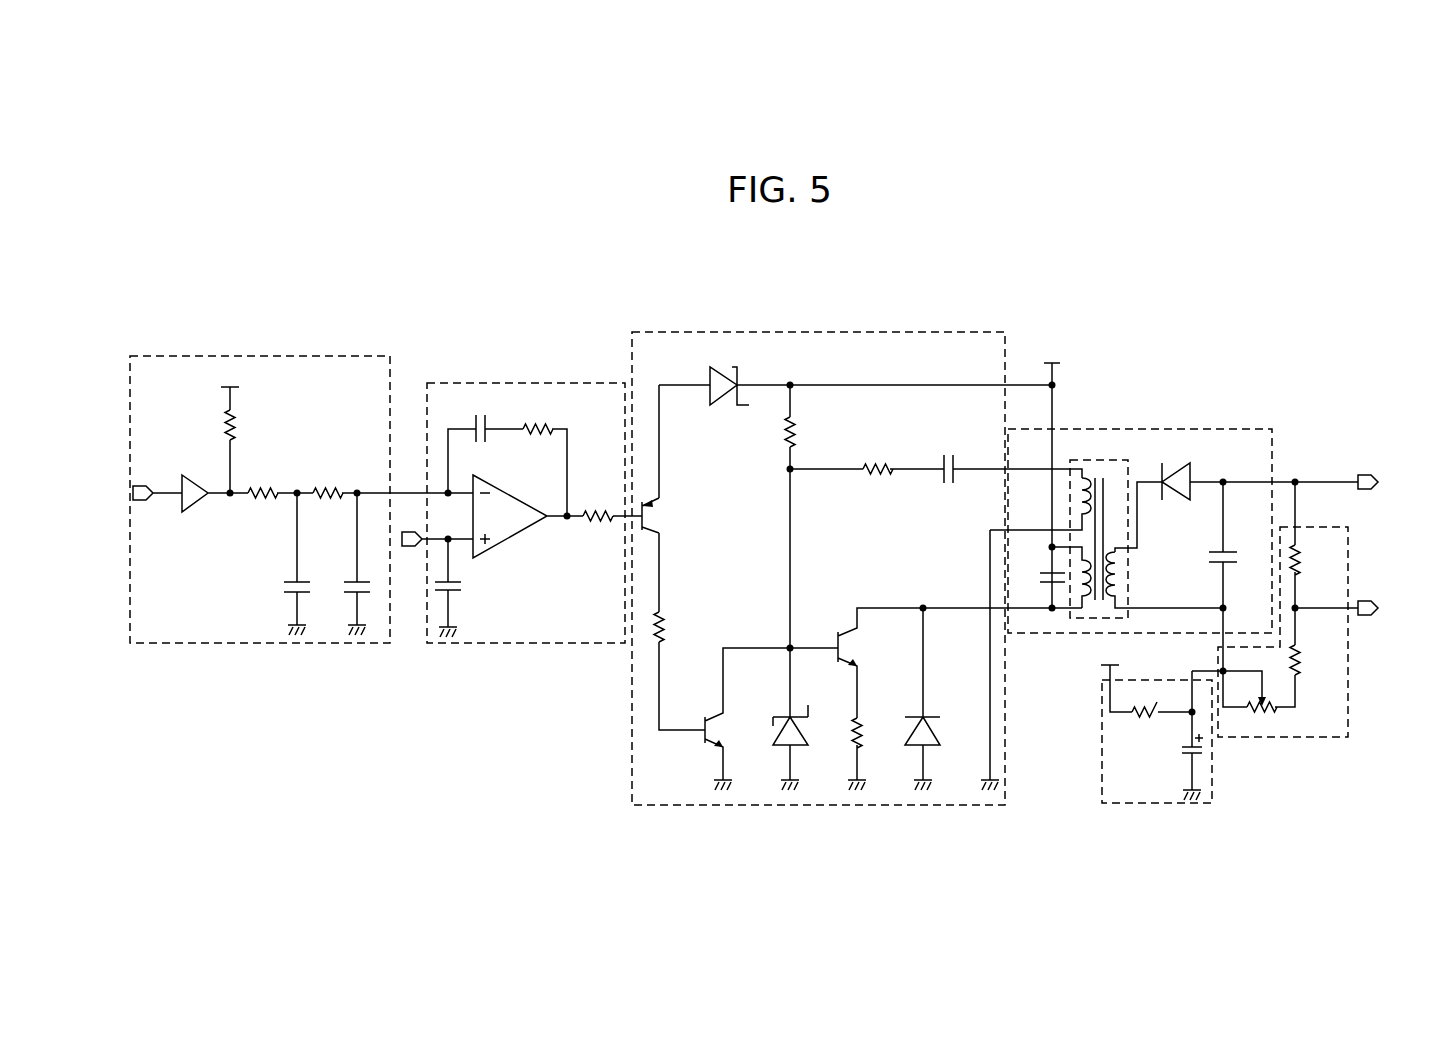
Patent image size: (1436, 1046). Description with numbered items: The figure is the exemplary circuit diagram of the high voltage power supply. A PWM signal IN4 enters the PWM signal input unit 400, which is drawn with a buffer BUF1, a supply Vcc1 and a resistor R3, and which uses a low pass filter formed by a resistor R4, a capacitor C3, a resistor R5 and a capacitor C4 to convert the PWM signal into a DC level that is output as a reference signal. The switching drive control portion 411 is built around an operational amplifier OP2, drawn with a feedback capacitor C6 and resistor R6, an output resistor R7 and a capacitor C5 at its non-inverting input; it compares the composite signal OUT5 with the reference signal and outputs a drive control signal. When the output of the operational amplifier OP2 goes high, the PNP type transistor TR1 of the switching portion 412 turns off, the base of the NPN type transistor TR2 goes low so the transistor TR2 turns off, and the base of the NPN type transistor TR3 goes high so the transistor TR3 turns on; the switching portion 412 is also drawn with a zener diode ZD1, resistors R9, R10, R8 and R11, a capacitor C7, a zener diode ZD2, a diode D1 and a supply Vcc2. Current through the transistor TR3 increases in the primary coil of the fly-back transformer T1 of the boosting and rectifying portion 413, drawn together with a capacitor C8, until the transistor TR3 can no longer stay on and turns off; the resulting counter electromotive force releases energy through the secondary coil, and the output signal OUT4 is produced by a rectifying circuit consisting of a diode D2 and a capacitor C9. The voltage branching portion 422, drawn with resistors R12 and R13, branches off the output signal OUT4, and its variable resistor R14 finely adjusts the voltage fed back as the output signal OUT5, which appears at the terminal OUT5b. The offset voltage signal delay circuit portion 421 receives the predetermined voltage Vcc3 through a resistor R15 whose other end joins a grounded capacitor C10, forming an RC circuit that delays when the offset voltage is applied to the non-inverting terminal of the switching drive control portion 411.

The pulse width modulation signal input unit 400 is at (292, 355).
The switching drive control portion 411 is at (533, 382).
The switching portion 412 is at (822, 330).
The boosting and rectifying portion 413 is at (1142, 428).
The offset voltage signal delay circuit portion 421 is at (1133, 678).
The voltage branching portion 422 is at (1320, 520).
The PWM signal IN4 is at (156, 480).
The buffer BUF1 is at (197, 502).
The supply voltage 1 Vcc1 is at (229, 387).
The resistor R3 is at (244, 451).
The resistor R4 is at (280, 479).
The resistor R5 is at (380, 479).
The capacitor C3 is at (311, 564).
The capacitor C4 is at (372, 564).
The operational amplifier OP2 is at (515, 492).
The capacitor C6 is at (485, 440).
The resistor R6 is at (545, 457).
The resistor R7 is at (612, 504).
The composite signal OUT5 is at (417, 528).
The output terminal 5 (right side) OUT5b is at (1363, 609).
The capacitor C5 is at (464, 588).
The PNP type transistor TR1 is at (669, 498).
The zener diode ZD1 is at (855, 373).
The resistor R9 is at (805, 516).
The resistor R10 is at (867, 457).
The capacitor C7 is at (1008, 458).
The resistor R8 is at (679, 671).
The NPN type transistor TR2 is at (749, 718).
The NPN type transistor TR3 is at (936, 662).
The zener diode ZD2 is at (811, 719).
The resistor R11 is at (876, 754).
The diode D1 is at (938, 699).
The supply voltage 2 Vcc2 is at (1052, 478).
The fly-back transformer T1 is at (1106, 528).
The capacitor C8 is at (1038, 583).
The diode D2 is at (1260, 470).
The capacitor C9 is at (1238, 578).
The output signal OUT4 is at (1396, 483).
The resistor R12 is at (1316, 563).
The resistor R13 is at (1309, 676).
The variable resistor R14 is at (1250, 705).
The predetermined voltage Vcc3 is at (1109, 676).
The resistor R15 is at (1174, 694).
The capacitor C10 is at (1173, 735).